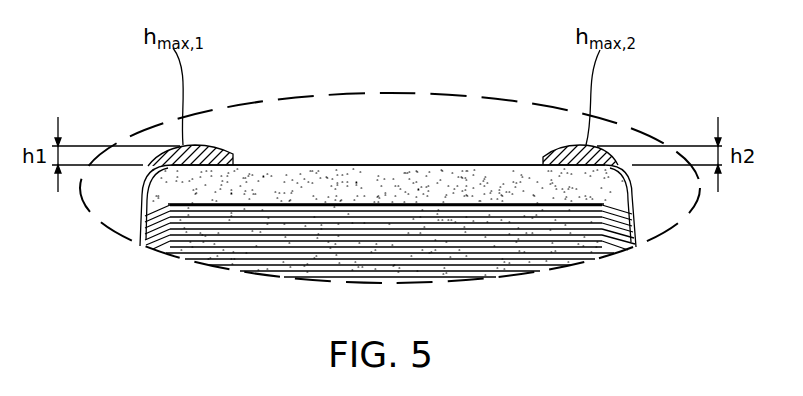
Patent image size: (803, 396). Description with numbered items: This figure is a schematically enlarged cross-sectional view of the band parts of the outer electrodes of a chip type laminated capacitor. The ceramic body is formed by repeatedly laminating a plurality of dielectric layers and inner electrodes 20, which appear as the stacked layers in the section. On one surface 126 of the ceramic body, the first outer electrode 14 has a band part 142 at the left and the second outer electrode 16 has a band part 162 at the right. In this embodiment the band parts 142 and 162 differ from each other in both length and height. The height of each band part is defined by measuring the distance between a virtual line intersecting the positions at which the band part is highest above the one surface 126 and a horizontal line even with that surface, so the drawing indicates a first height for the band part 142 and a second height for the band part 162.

The first outer electrode 14 is at (120, 215).
The second outer electrode 16 is at (655, 215).
The inner electrodes 20 is at (325, 201).
The one surface of the ceramic body 126 is at (413, 164).
The band part 142 is at (220, 152).
The band part 162 is at (556, 157).